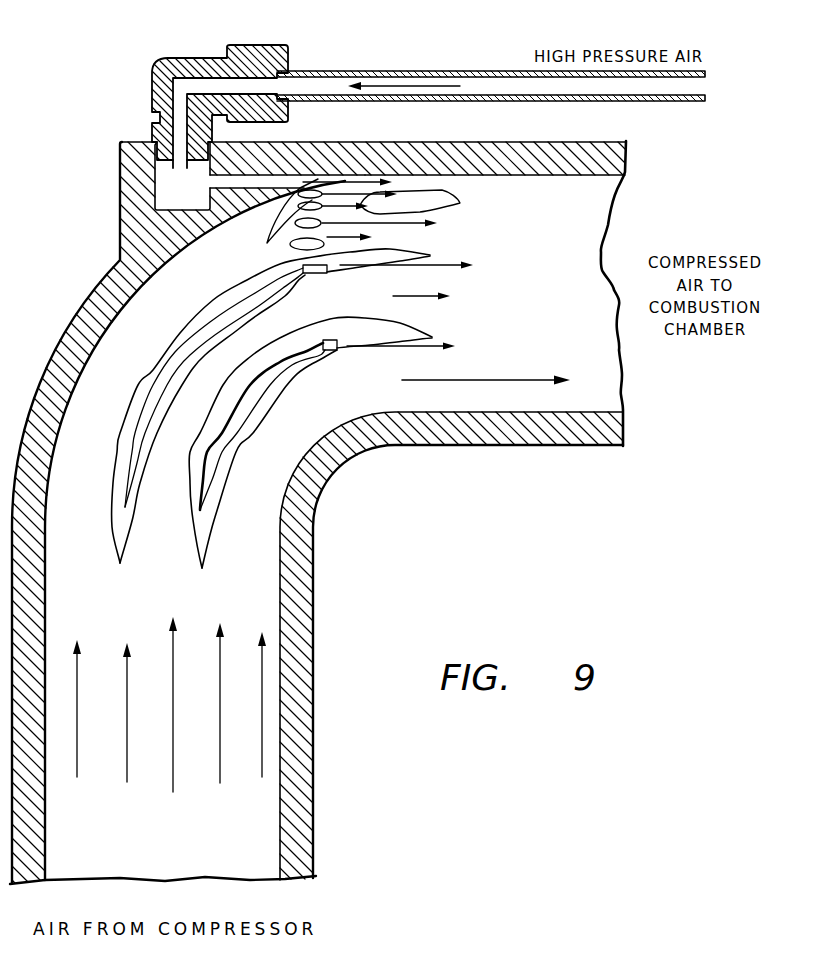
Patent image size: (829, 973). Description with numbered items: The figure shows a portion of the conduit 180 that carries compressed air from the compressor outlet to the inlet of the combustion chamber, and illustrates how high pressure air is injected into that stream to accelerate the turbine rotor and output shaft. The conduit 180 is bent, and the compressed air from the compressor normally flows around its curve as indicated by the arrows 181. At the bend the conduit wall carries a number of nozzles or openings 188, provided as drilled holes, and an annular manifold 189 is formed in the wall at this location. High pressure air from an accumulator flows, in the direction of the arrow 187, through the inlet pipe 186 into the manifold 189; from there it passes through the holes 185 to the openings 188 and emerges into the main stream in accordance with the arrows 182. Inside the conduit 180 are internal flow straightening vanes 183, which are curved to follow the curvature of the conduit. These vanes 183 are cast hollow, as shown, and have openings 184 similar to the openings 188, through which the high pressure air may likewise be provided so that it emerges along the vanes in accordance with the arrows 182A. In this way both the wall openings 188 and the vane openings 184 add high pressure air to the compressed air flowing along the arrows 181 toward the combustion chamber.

The conduit 180 is at (482, 446).
The arrows 181 is at (425, 295).
The arrows 182 is at (446, 201).
The arrows 182A is at (433, 340).
The internal flow straightening vanes 183 is at (183, 482).
The openings 184 is at (338, 345).
The holes 185 is at (278, 186).
The inlet pipe 186 is at (368, 71).
The arrow 187 is at (430, 85).
The nozzles or openings 188 is at (267, 243).
The annular manifold 189 is at (170, 193).